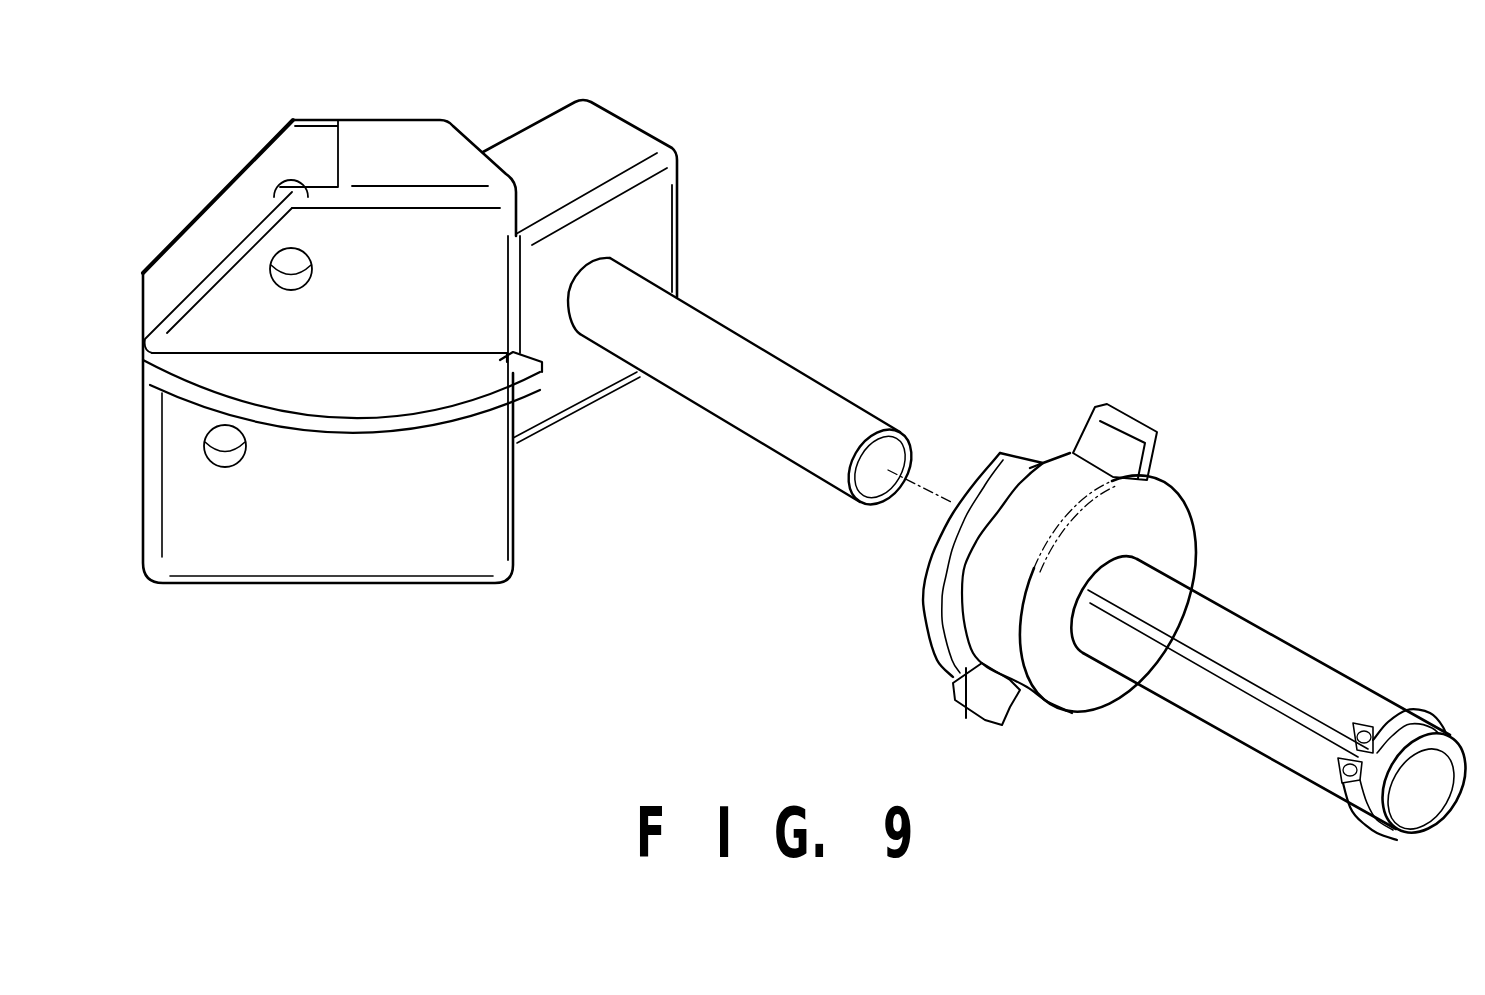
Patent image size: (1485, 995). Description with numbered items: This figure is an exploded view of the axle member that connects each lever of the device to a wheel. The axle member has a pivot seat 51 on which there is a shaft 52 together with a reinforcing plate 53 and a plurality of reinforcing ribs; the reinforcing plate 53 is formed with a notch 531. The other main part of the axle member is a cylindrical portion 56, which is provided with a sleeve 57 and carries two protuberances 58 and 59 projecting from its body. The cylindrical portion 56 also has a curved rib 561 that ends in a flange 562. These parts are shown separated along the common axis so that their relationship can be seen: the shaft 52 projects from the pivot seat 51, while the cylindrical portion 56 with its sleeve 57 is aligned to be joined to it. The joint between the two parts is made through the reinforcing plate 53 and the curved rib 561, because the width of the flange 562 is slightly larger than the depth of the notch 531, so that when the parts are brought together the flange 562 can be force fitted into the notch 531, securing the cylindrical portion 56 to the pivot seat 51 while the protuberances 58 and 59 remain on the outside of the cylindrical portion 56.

The pivot seat 51 is at (417, 143).
The shaft 52 is at (813, 397).
The reinforcing plate 53 is at (450, 397).
The notch 531 is at (520, 353).
The cylindrical portion 56 is at (1087, 693).
The curved rib 561 is at (940, 617).
The flange 562 is at (957, 537).
The sleeve 57 is at (1273, 742).
The protuberance 58 is at (982, 706).
The protuberance 59 is at (1157, 432).